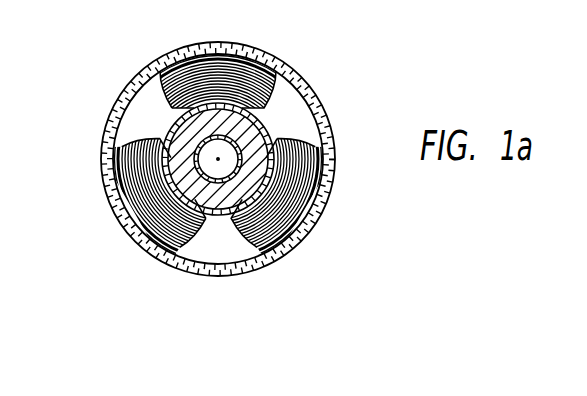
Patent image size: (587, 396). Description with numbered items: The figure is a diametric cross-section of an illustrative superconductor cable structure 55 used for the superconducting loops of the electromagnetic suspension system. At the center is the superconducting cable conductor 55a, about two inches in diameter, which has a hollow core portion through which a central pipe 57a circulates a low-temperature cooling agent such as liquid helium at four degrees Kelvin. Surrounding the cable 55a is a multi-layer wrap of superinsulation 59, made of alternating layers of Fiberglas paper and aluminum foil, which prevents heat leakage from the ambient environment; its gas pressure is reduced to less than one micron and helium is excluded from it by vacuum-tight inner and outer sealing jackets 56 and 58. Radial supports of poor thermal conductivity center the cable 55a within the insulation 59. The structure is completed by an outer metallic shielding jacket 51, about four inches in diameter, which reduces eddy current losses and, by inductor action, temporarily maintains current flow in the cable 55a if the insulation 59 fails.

The superconducting loop cable structure 55 is at (288, 56).
The outer sealing jacket 58 is at (301, 87).
The outer metallic shielding jacket 51 is at (336, 154).
The multi-layer superinsulation 59 is at (239, 50).
The superconducting cable conductor 55a is at (175, 176).
The inner sealing jacket 56 is at (172, 133).
The central pipe 57a is at (240, 154).